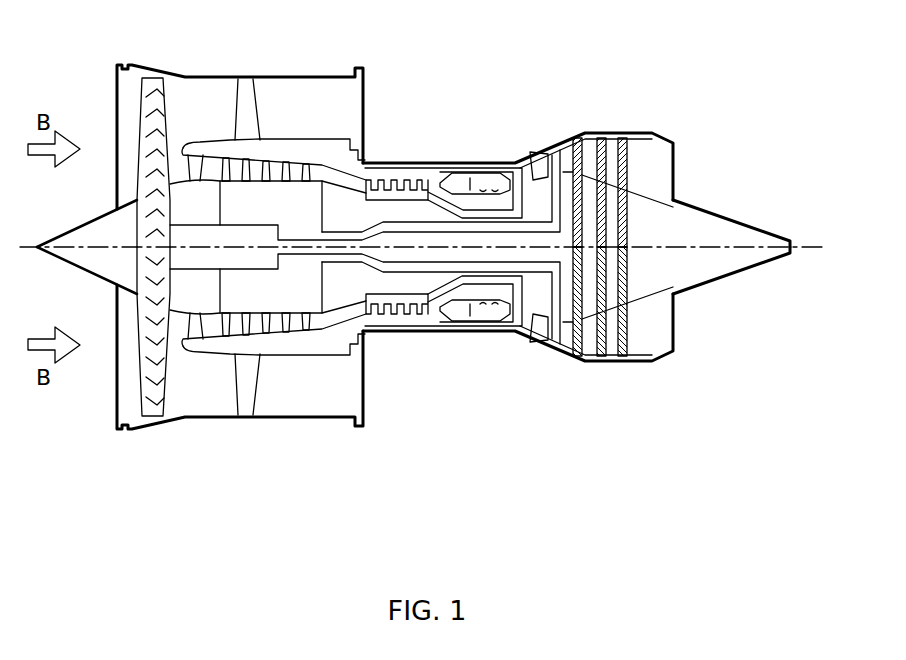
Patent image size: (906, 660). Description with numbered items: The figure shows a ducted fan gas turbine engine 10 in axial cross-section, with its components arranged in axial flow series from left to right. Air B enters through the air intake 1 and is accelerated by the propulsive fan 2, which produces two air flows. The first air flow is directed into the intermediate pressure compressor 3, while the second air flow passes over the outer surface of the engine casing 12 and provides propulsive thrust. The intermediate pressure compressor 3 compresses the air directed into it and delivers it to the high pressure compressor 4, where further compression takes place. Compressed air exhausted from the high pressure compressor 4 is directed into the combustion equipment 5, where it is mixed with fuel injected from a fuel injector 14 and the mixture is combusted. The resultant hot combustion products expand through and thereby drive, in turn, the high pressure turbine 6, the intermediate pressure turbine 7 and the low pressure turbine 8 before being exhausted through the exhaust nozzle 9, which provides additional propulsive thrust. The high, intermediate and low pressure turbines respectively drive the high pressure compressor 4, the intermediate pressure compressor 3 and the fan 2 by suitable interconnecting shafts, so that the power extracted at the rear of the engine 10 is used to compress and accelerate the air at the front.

The air intake 1 is at (128, 432).
The propulsive fan 2 is at (160, 80).
The intermediate pressure compressor 3 is at (252, 310).
The high pressure compressor 4 is at (405, 313).
The combustion equipment 5 is at (484, 171).
The high pressure turbine 6 is at (522, 152).
The intermediate pressure turbine 7 is at (560, 136).
The low pressure turbine 8 is at (572, 364).
The exhaust nozzle 9 is at (686, 247).
The ducted fan gas turbine engine 10 is at (413, 306).
The engine casing 12 is at (348, 143).
The fuel injector 14 is at (440, 183).